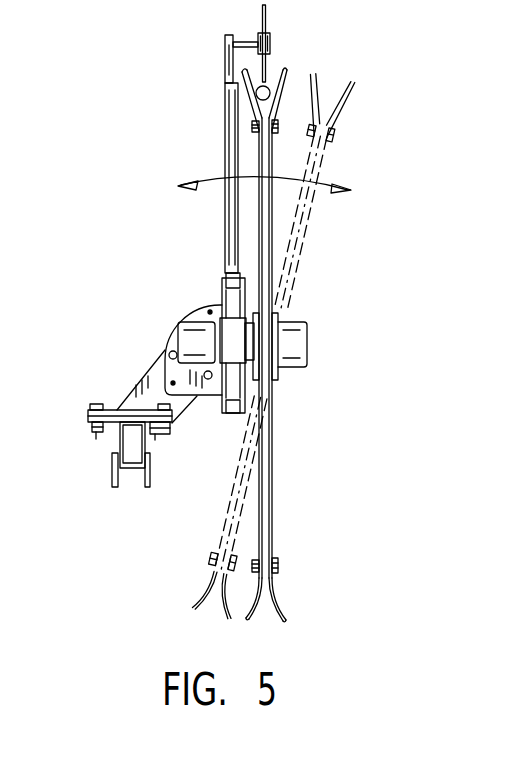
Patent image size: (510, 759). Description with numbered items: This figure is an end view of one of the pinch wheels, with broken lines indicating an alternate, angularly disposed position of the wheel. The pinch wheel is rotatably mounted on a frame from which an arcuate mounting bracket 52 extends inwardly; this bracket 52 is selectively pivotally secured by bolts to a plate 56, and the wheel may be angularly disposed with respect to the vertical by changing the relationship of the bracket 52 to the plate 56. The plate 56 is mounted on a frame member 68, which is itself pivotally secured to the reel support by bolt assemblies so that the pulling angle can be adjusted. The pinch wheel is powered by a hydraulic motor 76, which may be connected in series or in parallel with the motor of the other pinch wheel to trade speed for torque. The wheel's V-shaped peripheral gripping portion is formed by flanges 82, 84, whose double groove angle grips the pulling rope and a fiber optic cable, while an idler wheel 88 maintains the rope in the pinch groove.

The arcuate mounting bracket 52 is at (204, 305).
The plate 56 is at (157, 375).
The frame member 68 is at (120, 408).
The hydraulic motor 76 is at (189, 327).
The flange 82 is at (280, 95).
The flange 84 is at (252, 107).
The idler wheel 88 is at (270, 37).